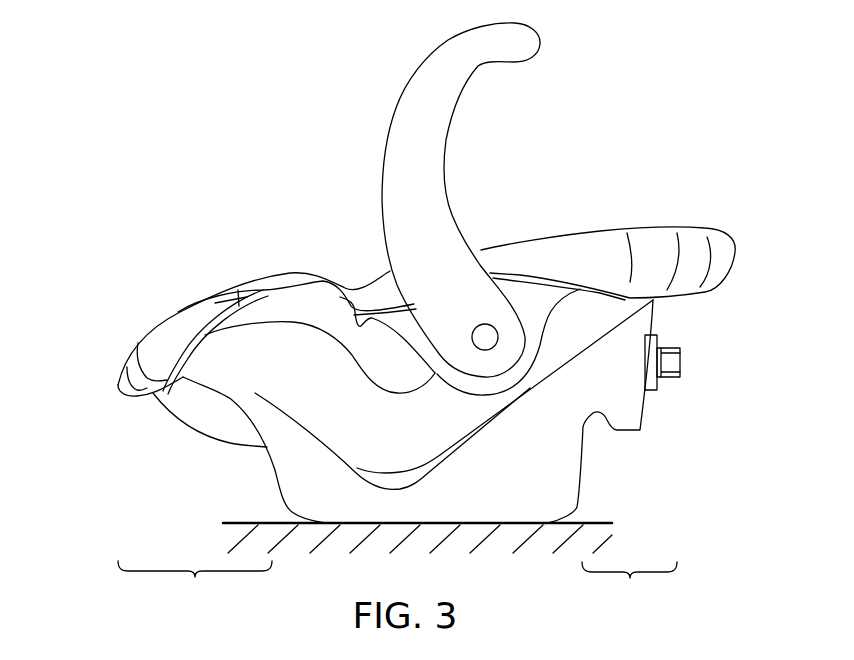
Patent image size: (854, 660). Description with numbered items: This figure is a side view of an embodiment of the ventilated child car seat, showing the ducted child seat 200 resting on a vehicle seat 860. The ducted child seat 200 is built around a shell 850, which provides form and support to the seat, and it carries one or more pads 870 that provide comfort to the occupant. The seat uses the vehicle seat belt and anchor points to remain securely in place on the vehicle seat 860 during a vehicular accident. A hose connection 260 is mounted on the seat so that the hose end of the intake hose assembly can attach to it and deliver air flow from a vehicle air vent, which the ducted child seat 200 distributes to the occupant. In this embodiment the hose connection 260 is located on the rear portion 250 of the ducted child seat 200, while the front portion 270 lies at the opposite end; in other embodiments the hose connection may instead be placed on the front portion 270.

The ducted child seat 200 is at (272, 280).
The pads 870 is at (147, 347).
The shell 850 is at (282, 477).
The vehicle seat 860 is at (538, 533).
The hose connection 260 is at (680, 377).
The front portion 270 is at (195, 584).
The rear portion 250 is at (629, 585).